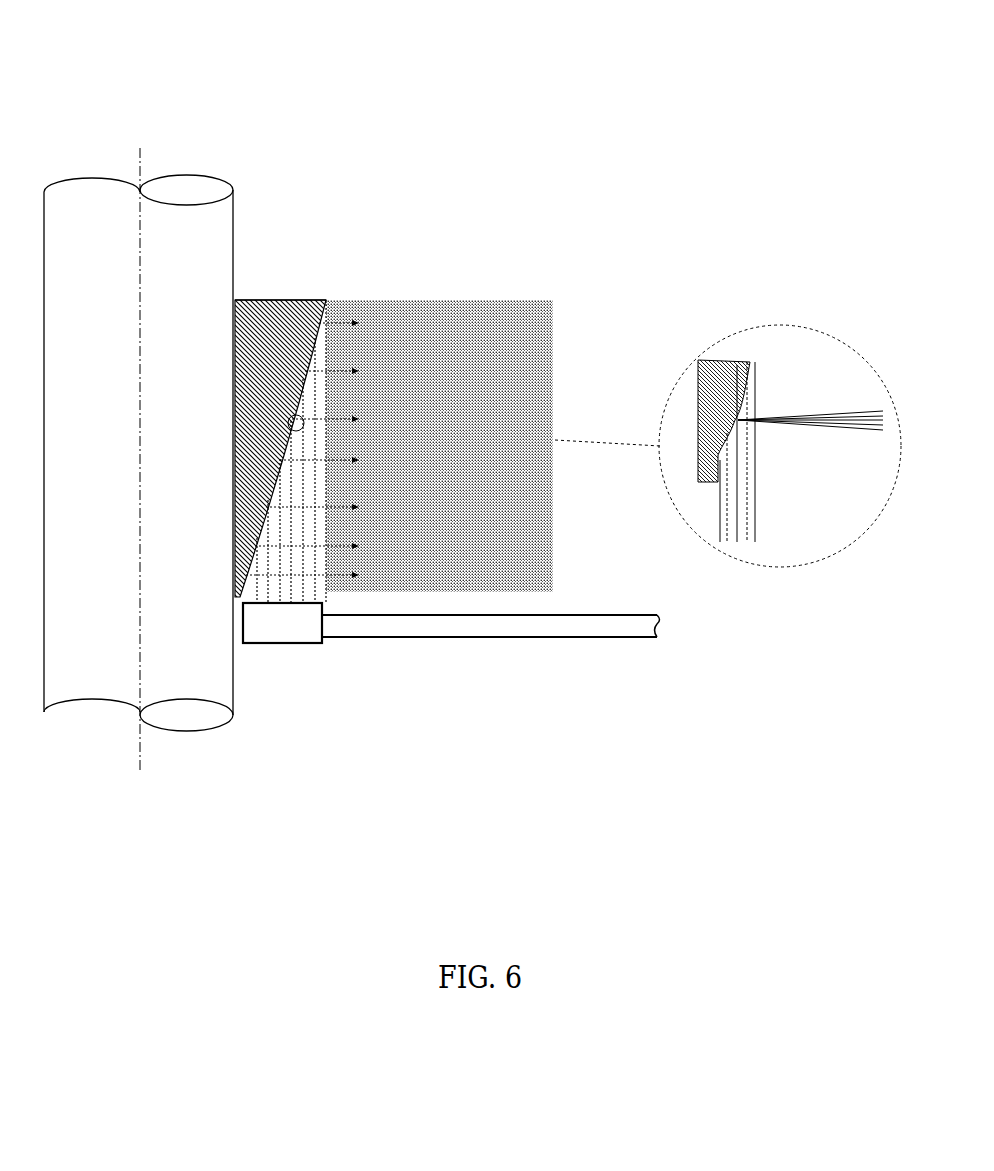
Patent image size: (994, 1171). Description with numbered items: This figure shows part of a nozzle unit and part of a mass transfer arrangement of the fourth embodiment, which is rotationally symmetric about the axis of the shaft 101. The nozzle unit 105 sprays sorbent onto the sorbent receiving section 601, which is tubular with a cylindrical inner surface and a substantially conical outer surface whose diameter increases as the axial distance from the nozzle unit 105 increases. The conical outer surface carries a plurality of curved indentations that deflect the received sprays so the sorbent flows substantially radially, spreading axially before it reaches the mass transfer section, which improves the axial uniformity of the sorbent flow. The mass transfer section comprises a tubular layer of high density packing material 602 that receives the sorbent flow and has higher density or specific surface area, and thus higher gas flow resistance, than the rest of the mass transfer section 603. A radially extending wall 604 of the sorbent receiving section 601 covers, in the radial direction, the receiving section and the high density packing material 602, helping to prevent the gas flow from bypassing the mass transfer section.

The shaft 101 is at (177, 263).
The nozzle unit 105 is at (270, 627).
The sorbent receiving section 601 is at (267, 355).
The high density packing material 602 is at (340, 357).
The rest of the mass transfer section 603 is at (515, 362).
The radially extending wall 604 is at (253, 298).